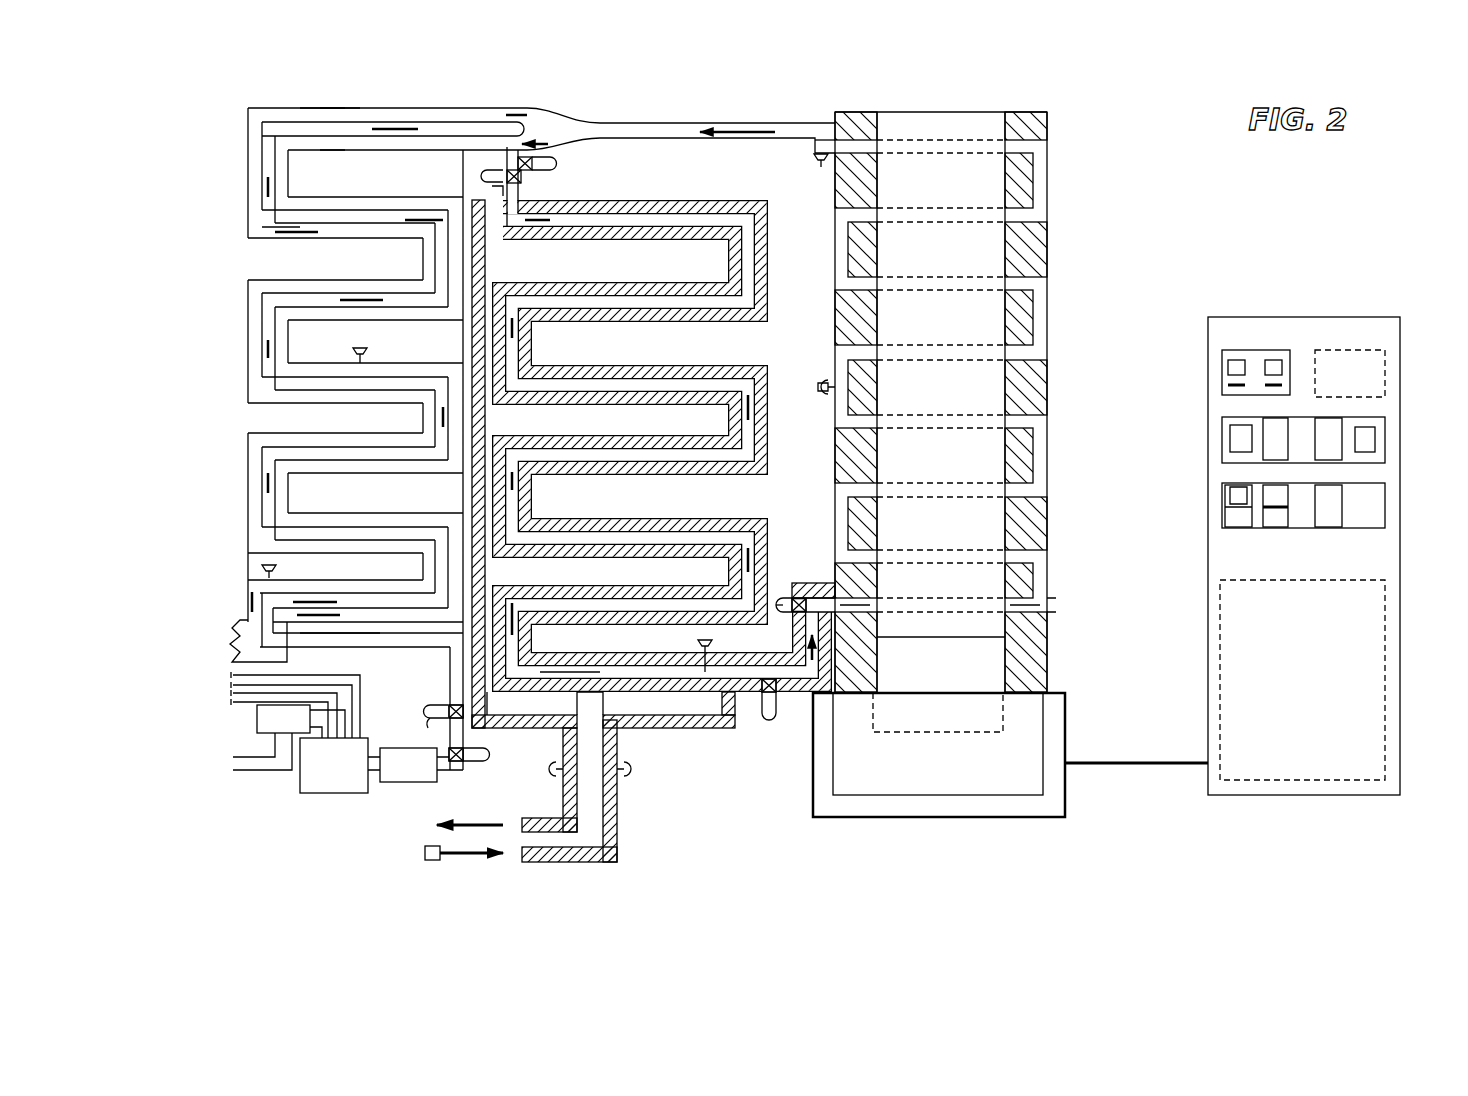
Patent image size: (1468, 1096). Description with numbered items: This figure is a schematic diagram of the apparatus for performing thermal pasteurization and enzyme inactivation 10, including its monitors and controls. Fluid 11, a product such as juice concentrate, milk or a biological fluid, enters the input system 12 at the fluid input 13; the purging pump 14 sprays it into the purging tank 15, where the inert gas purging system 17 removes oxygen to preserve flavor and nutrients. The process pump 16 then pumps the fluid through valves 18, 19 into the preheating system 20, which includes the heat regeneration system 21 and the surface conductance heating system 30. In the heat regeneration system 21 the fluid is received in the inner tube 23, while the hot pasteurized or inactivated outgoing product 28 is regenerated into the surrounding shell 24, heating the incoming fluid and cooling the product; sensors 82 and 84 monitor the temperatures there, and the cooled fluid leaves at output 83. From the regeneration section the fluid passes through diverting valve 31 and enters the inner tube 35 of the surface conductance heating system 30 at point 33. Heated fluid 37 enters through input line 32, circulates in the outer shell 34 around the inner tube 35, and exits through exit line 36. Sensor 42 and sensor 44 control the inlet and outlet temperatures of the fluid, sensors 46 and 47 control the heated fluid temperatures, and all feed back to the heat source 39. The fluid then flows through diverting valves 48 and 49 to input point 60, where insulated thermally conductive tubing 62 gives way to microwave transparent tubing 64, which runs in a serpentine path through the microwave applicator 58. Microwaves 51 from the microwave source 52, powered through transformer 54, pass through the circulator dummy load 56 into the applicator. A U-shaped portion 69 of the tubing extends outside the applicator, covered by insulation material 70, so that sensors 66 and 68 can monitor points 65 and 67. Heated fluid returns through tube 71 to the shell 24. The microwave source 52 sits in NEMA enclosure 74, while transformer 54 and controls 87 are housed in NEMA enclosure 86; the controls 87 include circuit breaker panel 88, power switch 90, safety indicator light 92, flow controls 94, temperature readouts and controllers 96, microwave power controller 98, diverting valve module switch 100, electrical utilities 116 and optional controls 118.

The apparatus for performing thermal pasteurization and enzyme inactivation 10 is at (657, 110).
The fluid 11 is at (505, 122).
The input system 12 is at (292, 797).
The fluid input 13 is at (273, 757).
The purging pump 14 is at (272, 731).
The purging tank 15 is at (322, 776).
The process pump 16 is at (394, 776).
The inert gas purging system 17 is at (233, 676).
The valve 18 is at (490, 755).
The valve 19 is at (423, 712).
The preheating system 20 is at (458, 92).
The heat regeneration system 21 is at (330, 112).
The inner tube 23 is at (388, 645).
The shell 24 is at (335, 108).
The pasteurized or inactivated outgoing product 28 is at (285, 240).
The surface conductance heating system 30 is at (213, 133).
The diverting valve 31 is at (560, 163).
The input line 32 is at (545, 863).
The point 33 is at (520, 180).
The outer shell 34 is at (605, 652).
The inner tube 35 is at (690, 222).
The exit line 36 is at (523, 815).
The heated fluid 37 is at (470, 856).
The heat source 39 is at (425, 855).
The sensor 42 is at (480, 183).
The sensor 44 is at (712, 650).
The sensor 46 is at (632, 768).
The sensor 47 is at (552, 768).
The diverting valve 48 is at (768, 722).
The diverting valve 49 is at (780, 600).
The microwaves 51 is at (993, 630).
The microwave source 52 is at (1062, 720).
The transformer 54 is at (1278, 790).
The circulator dummy load 56 is at (927, 670).
The microwave applicator 58 is at (1057, 605).
The input point 60 is at (822, 596).
The insulated thermally conductive tubing 62 is at (800, 596).
The microwave transparent tubing 64 is at (862, 605).
The point 65 is at (822, 380).
The sensor 66 is at (815, 395).
The point 67 is at (822, 138).
The sensor 68 is at (818, 168).
The U-shaped portion 69 is at (1040, 170).
The insulation material 70 is at (1030, 125).
The tube 71 is at (775, 130).
The NEMA enclosure 74 is at (890, 820).
The sensor 82 is at (368, 352).
The output 83 is at (245, 625).
The sensor 84 is at (258, 574).
The NEMA enclosure 86 is at (1400, 640).
The controls 87 is at (1415, 313).
The circuit breaker panel 88 is at (1339, 381).
The power switch 90 is at (1230, 443).
The safety indicator light 92 is at (1272, 350).
The flow controls 94 is at (1330, 435).
The temperature readouts and controllers 96 is at (1235, 515).
The microwave power controller 98 is at (1272, 525).
The diverting valve module switch 100 is at (1365, 508).
The electrical utilities 116 is at (1370, 442).
The optional controls 118 is at (1278, 460).